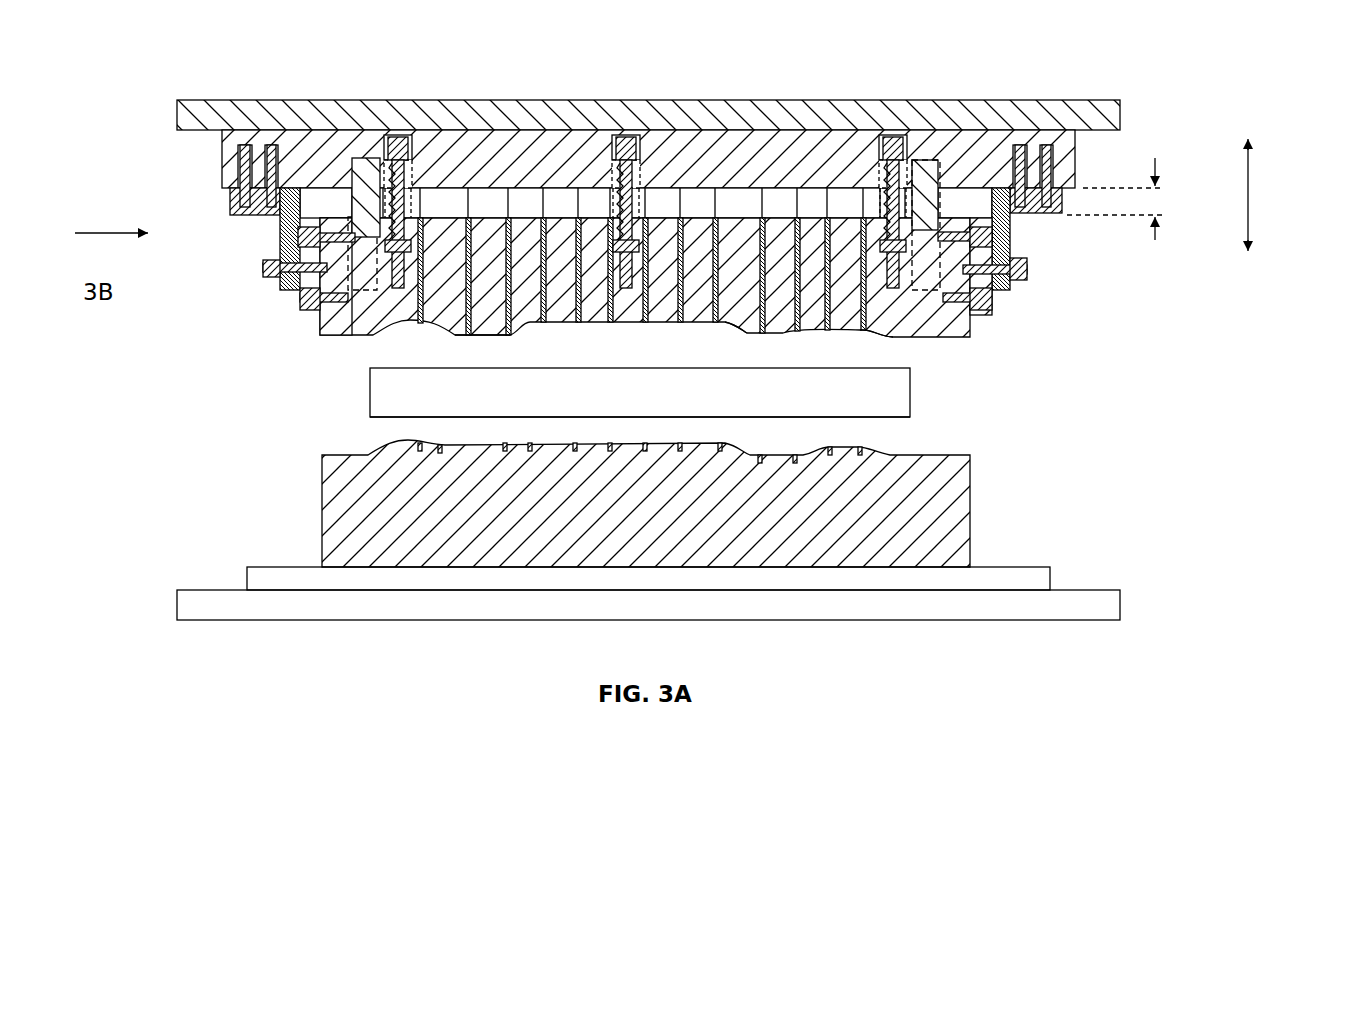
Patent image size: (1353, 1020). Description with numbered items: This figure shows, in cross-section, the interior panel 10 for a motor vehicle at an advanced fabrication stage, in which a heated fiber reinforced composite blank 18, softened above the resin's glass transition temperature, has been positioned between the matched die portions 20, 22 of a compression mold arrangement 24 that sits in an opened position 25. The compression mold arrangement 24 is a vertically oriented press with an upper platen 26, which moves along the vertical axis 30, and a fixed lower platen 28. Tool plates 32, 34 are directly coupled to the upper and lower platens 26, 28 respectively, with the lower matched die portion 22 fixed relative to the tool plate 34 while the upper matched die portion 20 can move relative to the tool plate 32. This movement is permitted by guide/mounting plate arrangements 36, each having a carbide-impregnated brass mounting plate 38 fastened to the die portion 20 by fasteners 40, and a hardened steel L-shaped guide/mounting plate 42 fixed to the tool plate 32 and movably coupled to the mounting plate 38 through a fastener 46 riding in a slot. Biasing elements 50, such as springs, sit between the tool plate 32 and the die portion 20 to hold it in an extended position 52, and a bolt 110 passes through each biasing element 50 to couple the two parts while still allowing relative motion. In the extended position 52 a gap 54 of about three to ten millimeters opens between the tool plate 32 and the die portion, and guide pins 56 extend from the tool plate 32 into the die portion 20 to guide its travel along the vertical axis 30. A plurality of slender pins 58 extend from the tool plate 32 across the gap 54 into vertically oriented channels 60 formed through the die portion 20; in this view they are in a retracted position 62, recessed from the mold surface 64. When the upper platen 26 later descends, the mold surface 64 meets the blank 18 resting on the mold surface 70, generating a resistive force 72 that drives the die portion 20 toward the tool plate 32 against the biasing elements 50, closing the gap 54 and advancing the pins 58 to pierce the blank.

The interior panel 10 is at (915, 385).
The heated fiber reinforced composite blank 18 is at (915, 410).
The matched die portion 20 is at (1010, 246).
The matched die portion 22 is at (975, 515).
The compression mold arrangement 24 is at (905, 80).
The opened position 25 is at (1038, 397).
The upper platen 26 is at (1110, 118).
The lower platen 28 is at (1118, 598).
The vertical axis 30 is at (1248, 196).
The tool plate 32 is at (1062, 178).
The tool plate 34 is at (1052, 567).
The guide/mounting plate arrangement 36 is at (280, 258).
The mounting plate 38 is at (298, 306).
The fasteners 40 is at (338, 224).
The guide/mounting plate 42 is at (280, 225).
The fastener 46 is at (268, 285).
The biasing elements 50 is at (403, 190).
The extended position 52 is at (1000, 288).
The gap 54 is at (1160, 165).
The guide pins 56 is at (378, 158).
The pins 58 is at (545, 210).
The channels 60 is at (700, 232).
The retracted position 62 is at (850, 318).
The mold surface 64 is at (790, 325).
The mold surface 70 is at (440, 453).
The resistive force 72 is at (545, 328).
The bolt 110 is at (404, 137).